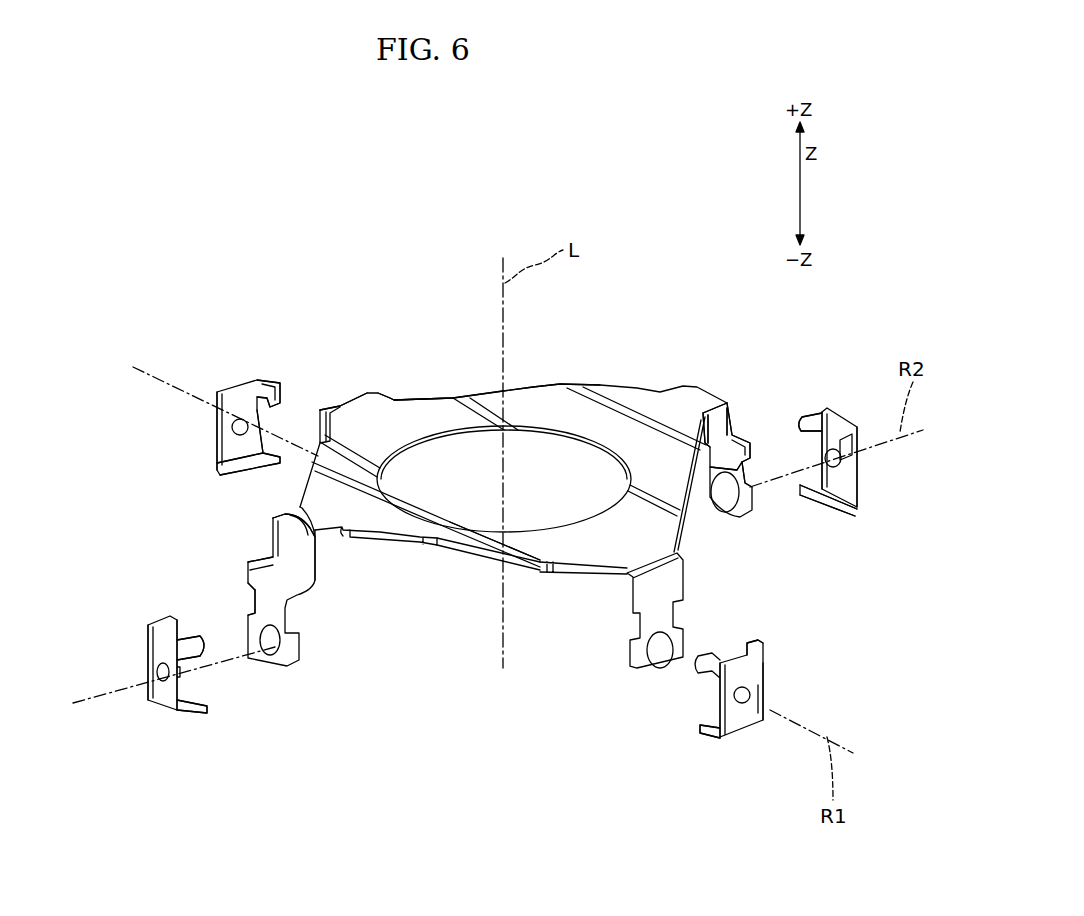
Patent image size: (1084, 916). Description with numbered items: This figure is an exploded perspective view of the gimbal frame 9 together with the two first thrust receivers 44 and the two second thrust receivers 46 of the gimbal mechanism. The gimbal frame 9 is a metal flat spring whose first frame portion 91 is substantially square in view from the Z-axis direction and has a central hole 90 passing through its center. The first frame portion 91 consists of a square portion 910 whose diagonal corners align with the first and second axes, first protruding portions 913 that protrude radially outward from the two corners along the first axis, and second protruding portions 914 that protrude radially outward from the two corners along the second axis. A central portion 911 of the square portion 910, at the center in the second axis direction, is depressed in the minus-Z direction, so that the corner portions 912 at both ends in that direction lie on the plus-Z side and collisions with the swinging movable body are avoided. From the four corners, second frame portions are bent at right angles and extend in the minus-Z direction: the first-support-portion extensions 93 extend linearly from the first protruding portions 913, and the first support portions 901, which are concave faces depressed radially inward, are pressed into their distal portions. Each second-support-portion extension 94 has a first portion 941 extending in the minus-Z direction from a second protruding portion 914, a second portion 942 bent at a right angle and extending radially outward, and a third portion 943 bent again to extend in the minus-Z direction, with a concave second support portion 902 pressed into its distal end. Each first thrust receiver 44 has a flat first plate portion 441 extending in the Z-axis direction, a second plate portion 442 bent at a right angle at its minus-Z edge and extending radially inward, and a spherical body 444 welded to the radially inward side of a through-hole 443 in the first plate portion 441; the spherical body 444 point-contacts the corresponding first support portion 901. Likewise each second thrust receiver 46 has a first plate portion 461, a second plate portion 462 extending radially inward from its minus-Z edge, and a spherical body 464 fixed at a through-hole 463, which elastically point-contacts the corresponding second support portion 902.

The gimbal frame 9 is at (600, 390).
The central hole 90 is at (555, 432).
The first frame portion 91 is at (533, 391).
The square portion 910 is at (497, 545).
The central portion 911 is at (413, 404).
The corner portions 912 is at (643, 393).
The first protruding portions 913 is at (368, 395).
The second protruding portions 914 is at (300, 508).
The first-support-portion extensions 93 is at (315, 428).
The second-support-portion extensions 94 is at (310, 590).
The first portion 941 is at (277, 540).
The second portion 942 is at (258, 562).
The third portion 943 is at (265, 600).
The first support portions 901 is at (665, 650).
The second support portions 902 is at (268, 640).
The first thrust receiver 44 is at (250, 372).
The first plate portion 441 is at (220, 442).
The second plate portion 442 is at (220, 475).
The through-hole 443 is at (748, 703).
The spherical body 444 is at (233, 430).
The second thrust receiver 46 is at (140, 618).
The first plate portion 461 is at (170, 700).
The second plate portion 462 is at (190, 718).
The through-hole 463 is at (163, 687).
The spherical body 464 is at (160, 670).